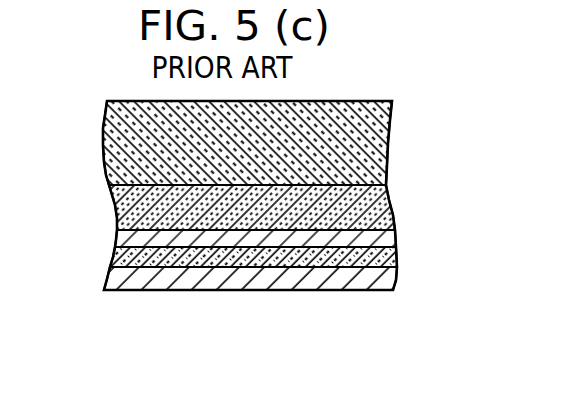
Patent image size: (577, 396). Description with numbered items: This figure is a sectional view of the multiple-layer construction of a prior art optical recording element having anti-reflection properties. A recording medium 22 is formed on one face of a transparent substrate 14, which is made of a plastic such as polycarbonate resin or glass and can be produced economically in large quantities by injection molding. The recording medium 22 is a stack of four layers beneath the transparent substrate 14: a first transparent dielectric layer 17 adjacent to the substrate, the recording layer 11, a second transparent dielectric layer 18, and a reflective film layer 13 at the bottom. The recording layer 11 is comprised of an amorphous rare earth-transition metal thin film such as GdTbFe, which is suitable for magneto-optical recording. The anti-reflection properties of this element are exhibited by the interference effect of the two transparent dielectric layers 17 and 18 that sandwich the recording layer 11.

The transparent substrate 14 is at (388, 143).
The transparent dielectric layer 17 is at (392, 208).
The recording layer 11 is at (394, 235).
The transparent dielectric layer 18 is at (398, 255).
The reflective film layer 13 is at (284, 294).
The recording medium 22 is at (313, 253).